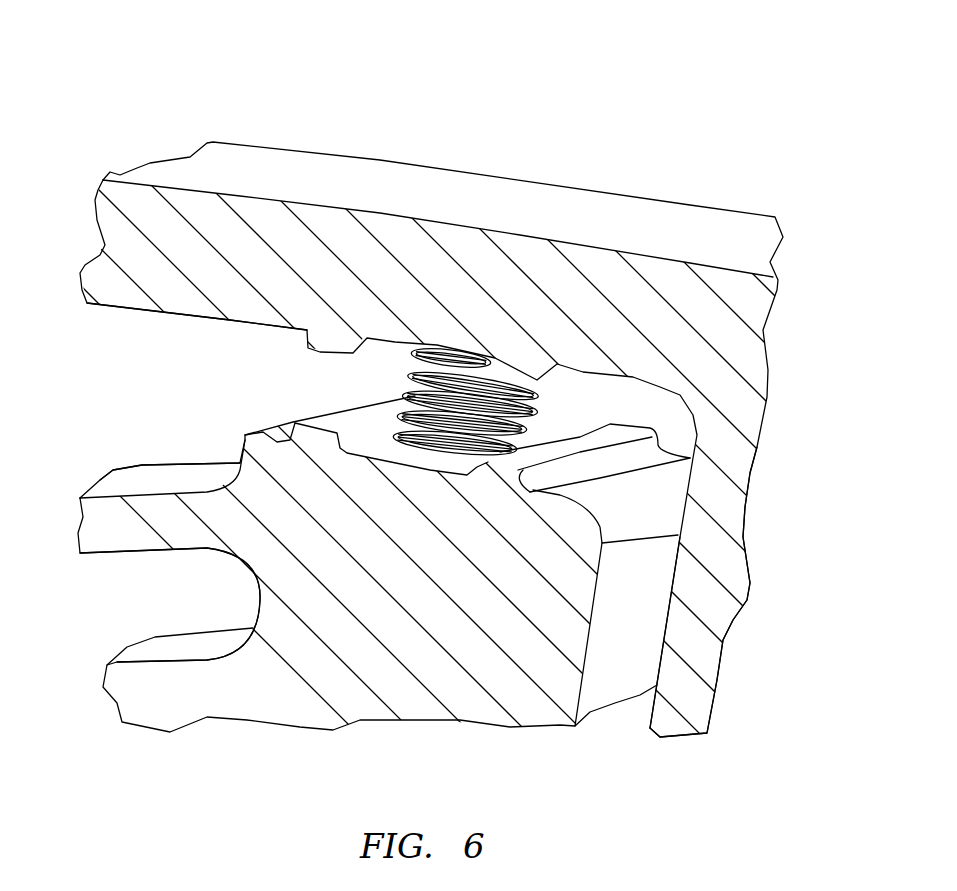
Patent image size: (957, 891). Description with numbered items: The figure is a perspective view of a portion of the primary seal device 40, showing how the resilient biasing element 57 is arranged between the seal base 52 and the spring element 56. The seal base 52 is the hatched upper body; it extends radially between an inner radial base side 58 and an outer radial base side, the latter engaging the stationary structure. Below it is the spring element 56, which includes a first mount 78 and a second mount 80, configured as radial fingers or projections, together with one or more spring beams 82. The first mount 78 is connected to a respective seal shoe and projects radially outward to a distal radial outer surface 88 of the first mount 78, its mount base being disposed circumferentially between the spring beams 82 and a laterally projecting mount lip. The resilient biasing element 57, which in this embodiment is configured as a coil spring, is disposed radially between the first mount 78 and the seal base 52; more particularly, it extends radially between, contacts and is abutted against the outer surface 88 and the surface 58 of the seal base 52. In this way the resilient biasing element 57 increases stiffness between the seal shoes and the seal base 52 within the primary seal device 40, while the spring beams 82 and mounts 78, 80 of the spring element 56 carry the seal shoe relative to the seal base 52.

The primary seal device 40 is at (595, 84).
The seal base 52 is at (224, 150).
The spring element 56 is at (75, 535).
The resilient biasing element 57 is at (397, 385).
The inner radial base side 58 is at (230, 322).
The first mount 78 is at (623, 660).
The second mount 80 is at (740, 563).
The spring beam 82 is at (141, 473).
The distal radial outer surface 88 is at (547, 440).